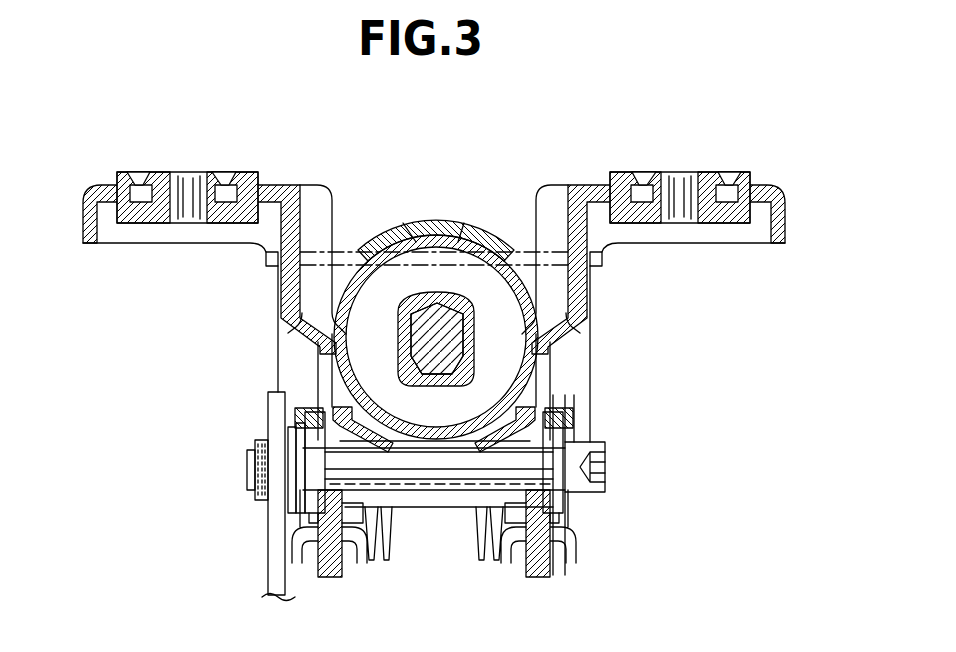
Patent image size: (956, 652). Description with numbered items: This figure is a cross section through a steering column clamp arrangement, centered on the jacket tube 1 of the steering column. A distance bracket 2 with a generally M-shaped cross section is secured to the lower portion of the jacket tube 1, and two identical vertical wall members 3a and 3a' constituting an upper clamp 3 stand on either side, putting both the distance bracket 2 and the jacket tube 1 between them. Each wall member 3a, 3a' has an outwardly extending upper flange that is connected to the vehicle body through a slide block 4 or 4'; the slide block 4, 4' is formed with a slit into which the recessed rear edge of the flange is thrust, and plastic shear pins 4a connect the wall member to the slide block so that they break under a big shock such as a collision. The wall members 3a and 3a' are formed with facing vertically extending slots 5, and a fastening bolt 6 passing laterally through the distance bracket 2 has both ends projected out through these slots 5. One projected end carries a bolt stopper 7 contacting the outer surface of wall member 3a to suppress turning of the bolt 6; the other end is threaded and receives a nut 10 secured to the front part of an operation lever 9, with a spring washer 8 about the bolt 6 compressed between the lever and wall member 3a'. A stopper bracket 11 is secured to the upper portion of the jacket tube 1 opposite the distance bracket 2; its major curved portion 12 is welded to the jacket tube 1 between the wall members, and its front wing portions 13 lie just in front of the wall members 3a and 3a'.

The jacket tube 1 is at (460, 434).
The distance bracket 2 is at (574, 418).
The upper clamp 3 is at (580, 183).
The vertical wall member 3a is at (635, 311).
The vertical wall member 3a' is at (244, 309).
The slide block 4 is at (695, 173).
The slide block 4' is at (187, 159).
The shear pin 4a is at (140, 178).
The vertically extending slot 5 is at (322, 374).
The fastening bolt 6 is at (413, 480).
The bolt stopper 7 is at (597, 425).
The spring washer 8 is at (288, 436).
The operation lever 9 is at (268, 553).
The nut 10 is at (247, 496).
The stopper bracket 11 is at (455, 216).
The major curved portion 12 is at (402, 222).
The wing portion 13 is at (265, 258).